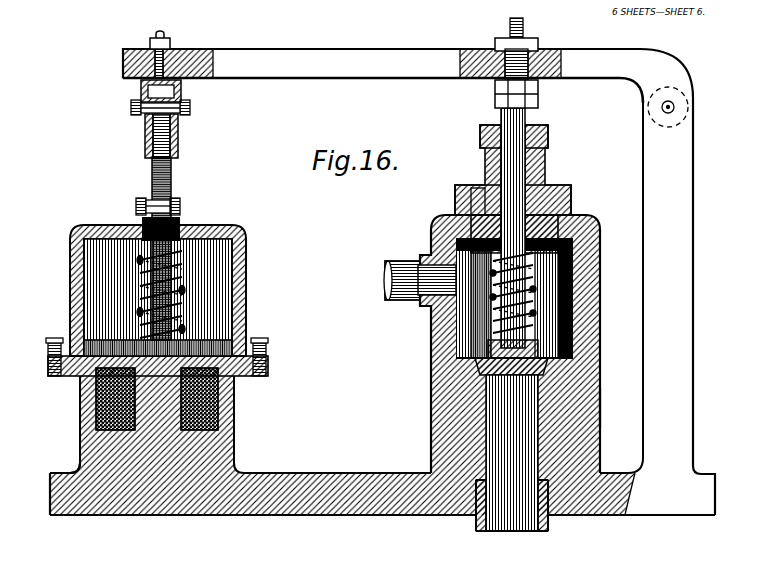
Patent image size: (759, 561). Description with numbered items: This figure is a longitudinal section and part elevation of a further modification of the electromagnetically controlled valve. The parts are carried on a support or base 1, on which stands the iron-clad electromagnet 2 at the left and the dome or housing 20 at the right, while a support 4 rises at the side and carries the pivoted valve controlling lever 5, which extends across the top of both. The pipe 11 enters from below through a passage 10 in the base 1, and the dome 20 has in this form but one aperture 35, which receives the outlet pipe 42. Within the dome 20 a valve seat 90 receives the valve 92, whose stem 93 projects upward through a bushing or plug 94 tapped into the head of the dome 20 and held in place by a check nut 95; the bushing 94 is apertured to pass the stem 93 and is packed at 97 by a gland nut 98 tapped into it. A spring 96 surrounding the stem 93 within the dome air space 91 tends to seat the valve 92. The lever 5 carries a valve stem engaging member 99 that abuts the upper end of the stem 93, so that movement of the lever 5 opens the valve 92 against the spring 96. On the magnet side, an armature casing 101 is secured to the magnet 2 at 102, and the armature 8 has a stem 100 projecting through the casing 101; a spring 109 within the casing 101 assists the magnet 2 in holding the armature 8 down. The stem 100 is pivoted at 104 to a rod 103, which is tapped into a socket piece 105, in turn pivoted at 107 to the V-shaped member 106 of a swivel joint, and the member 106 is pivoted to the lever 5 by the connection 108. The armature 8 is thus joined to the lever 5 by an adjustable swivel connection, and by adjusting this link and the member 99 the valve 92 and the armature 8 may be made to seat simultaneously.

The support or base 1 is at (382, 365).
The iron-clad electromagnet 2 is at (149, 420).
The support 4 is at (671, 301).
The valve controlling lever 5 is at (408, 76).
The armature 8 is at (192, 338).
The passage 10 is at (527, 457).
The pipe 11 is at (517, 518).
The dome or housing 20 is at (572, 401).
The aperture 35 is at (422, 247).
The outlet pipe 42 is at (378, 256).
The valve seat 90 is at (452, 382).
The dome air space 91 is at (485, 325).
The valve 92 is at (468, 360).
The valve stem 93 is at (525, 328).
The bushing or plug 94 is at (470, 180).
The check nut 95 is at (565, 196).
The spring 96 is at (527, 312).
The packing 97 is at (540, 176).
The gland nut 98 is at (541, 127).
The valve stem engaging member 99 is at (524, 80).
The armature stem 100 is at (108, 222).
The armature casing 101 is at (62, 285).
The securing connection 102 is at (256, 370).
The rod 103 is at (165, 172).
The pivot 104 is at (172, 200).
The socket piece 105 is at (171, 143).
The V-shaped member 106 is at (175, 86).
The pivot 107 is at (178, 103).
The connection 108 is at (158, 31).
The spring 109 is at (167, 298).